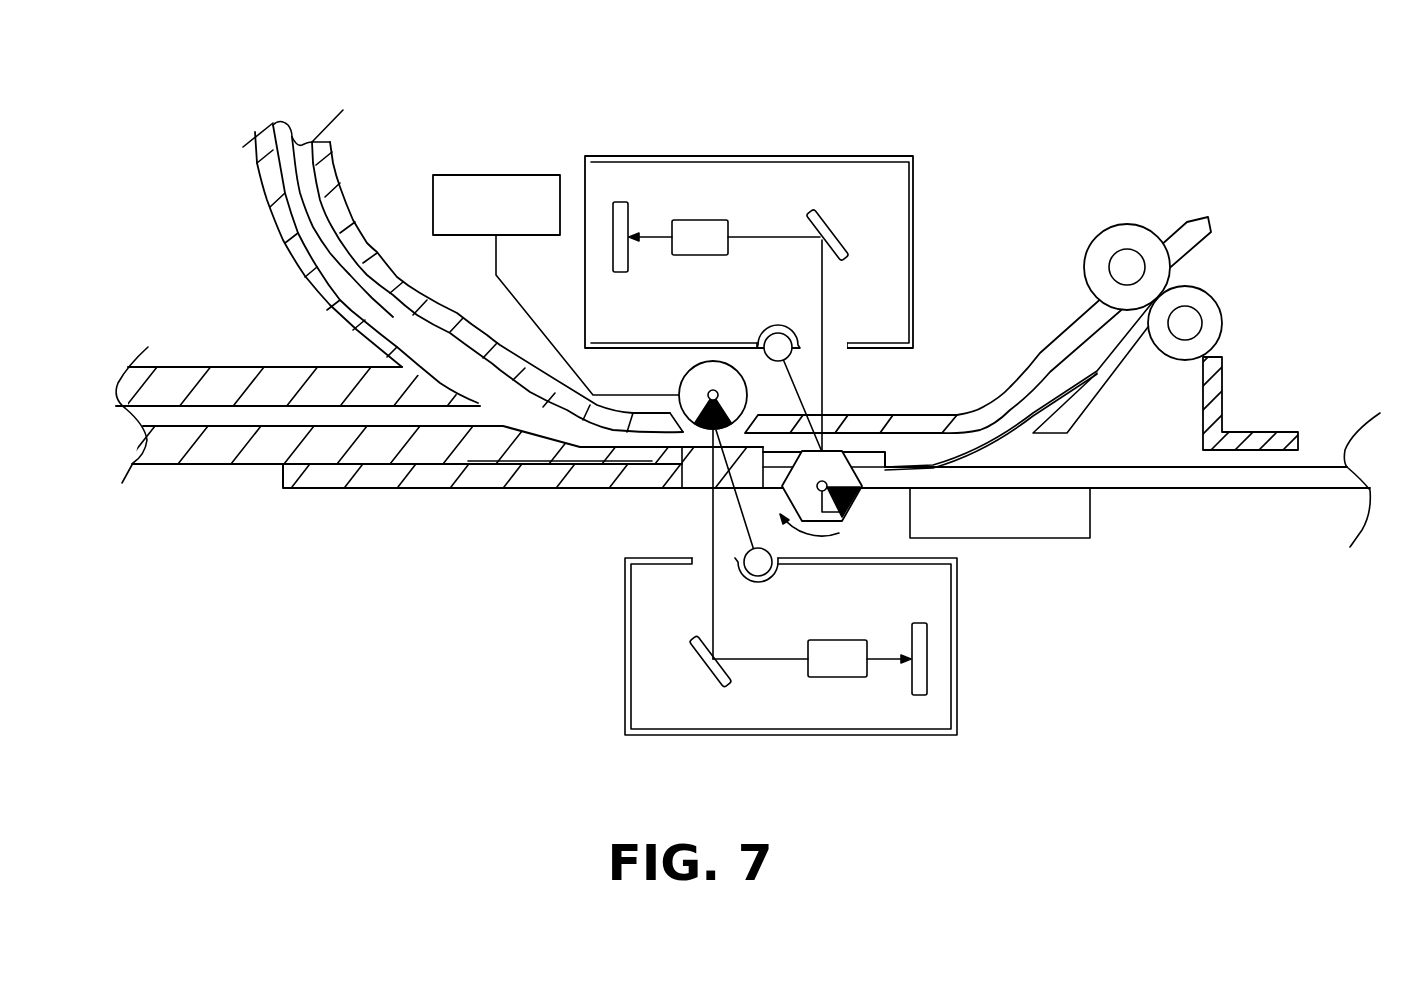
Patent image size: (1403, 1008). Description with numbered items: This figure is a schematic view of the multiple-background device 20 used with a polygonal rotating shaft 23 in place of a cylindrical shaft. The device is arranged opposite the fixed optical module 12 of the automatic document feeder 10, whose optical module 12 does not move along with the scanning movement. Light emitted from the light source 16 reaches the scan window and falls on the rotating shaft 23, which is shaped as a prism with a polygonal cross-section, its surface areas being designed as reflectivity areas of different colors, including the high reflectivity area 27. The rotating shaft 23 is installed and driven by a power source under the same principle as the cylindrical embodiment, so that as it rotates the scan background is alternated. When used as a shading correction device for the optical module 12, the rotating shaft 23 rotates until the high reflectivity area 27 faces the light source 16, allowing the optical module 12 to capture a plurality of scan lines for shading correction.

The automatic document feeder 10 is at (797, 237).
The optical module 12 is at (913, 238).
The light source 16 is at (772, 335).
The high reflectivity area 27 is at (801, 472).
The rotating shaft 23 is at (843, 452).
The multiple-background device 20 is at (862, 503).